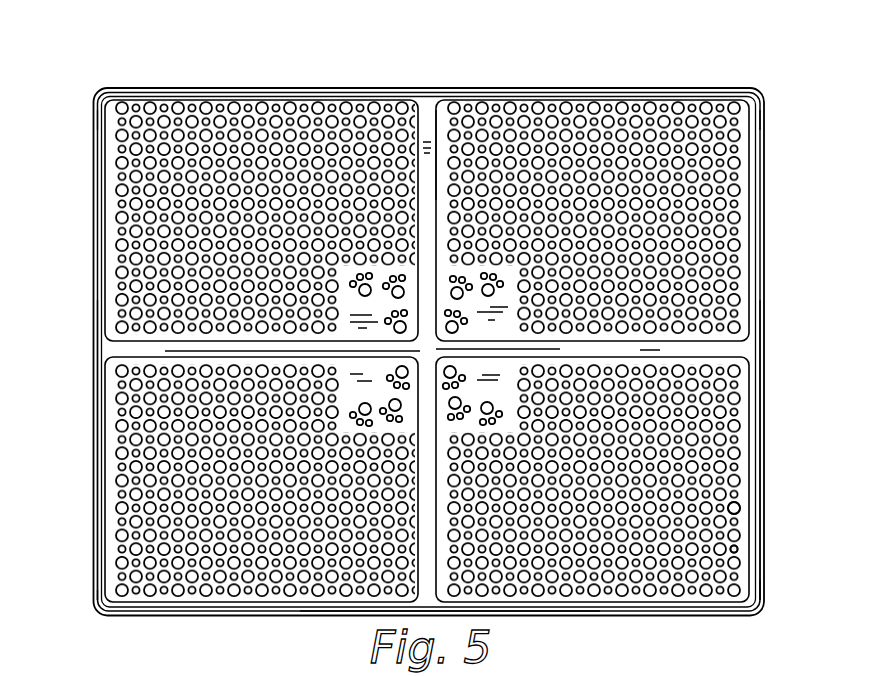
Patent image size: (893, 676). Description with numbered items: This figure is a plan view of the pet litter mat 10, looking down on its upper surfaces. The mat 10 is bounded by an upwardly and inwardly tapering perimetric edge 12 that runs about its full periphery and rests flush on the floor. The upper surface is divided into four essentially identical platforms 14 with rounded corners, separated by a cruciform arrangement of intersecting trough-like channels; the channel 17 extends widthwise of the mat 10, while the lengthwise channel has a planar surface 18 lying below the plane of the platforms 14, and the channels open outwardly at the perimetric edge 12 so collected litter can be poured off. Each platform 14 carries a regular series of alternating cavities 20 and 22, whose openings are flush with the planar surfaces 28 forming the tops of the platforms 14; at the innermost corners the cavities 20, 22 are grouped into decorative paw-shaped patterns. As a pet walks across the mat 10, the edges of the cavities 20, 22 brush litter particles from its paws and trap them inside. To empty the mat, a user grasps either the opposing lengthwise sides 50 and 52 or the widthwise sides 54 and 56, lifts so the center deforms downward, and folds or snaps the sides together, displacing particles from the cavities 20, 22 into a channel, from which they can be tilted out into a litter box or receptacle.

The litter mat 10 is at (582, 67).
The perimetric edge 12 is at (766, 166).
The platforms 14 is at (747, 306).
The channel 17 is at (433, 110).
The planar surface 18 is at (428, 130).
The cavities 20 is at (740, 505).
The cavities 22 is at (739, 548).
The planar surfaces 28 is at (110, 125).
The lengthwise side 50 is at (517, 612).
The lengthwise side 52 is at (662, 88).
The widthwise side 54 is at (92, 447).
The widthwise side 56 is at (763, 435).